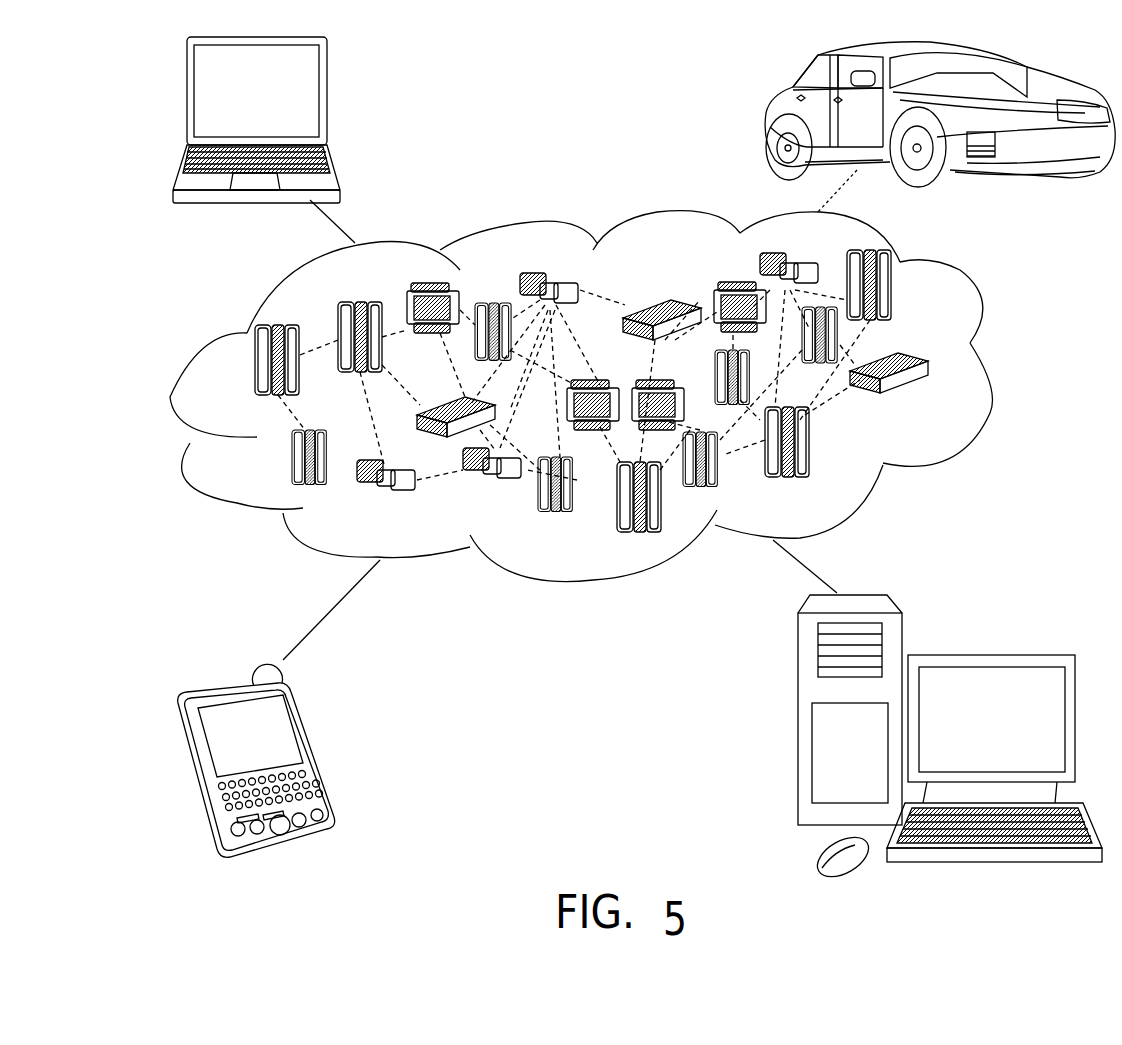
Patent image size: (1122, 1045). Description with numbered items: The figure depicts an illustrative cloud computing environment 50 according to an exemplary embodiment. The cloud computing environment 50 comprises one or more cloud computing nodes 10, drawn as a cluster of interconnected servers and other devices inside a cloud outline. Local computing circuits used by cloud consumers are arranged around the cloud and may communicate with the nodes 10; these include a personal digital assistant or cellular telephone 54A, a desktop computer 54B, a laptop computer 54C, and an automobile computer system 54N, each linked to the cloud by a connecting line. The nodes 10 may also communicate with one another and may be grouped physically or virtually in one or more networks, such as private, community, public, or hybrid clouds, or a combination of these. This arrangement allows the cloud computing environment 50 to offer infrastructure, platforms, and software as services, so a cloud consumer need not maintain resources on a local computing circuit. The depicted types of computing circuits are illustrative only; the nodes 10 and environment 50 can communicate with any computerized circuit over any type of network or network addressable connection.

The cloud computing node 10 is at (940, 401).
The cloud computing environment 50 is at (607, 435).
The personal digital assistant (PDA) or cellular telephone 54A is at (318, 749).
The desktop computer 54B is at (990, 655).
The laptop computer 54C is at (327, 98).
The automobile computer system 54N is at (766, 118).